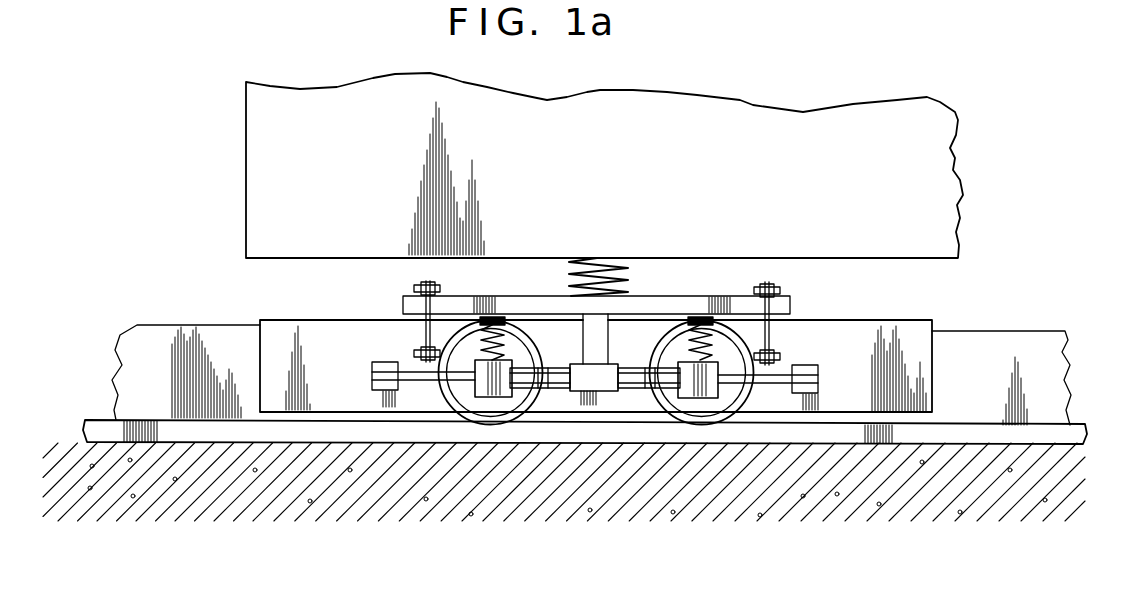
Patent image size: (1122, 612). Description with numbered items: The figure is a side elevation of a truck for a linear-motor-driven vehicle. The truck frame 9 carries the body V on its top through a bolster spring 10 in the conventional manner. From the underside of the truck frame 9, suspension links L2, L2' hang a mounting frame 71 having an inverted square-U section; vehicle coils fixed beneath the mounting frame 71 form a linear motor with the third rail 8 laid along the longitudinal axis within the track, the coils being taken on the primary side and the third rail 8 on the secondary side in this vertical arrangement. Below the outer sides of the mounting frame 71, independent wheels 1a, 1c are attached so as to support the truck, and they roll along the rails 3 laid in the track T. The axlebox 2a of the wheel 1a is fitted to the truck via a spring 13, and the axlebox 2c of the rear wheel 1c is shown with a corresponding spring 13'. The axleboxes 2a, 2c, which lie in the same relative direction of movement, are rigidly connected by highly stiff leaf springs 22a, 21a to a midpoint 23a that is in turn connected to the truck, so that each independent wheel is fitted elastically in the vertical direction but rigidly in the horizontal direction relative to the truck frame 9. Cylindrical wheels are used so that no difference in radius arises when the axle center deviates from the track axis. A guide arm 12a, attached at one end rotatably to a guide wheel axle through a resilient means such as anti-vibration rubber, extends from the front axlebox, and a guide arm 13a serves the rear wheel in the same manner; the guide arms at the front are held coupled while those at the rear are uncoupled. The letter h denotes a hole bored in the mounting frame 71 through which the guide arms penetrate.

The body V is at (935, 186).
The bolster spring 10 is at (566, 258).
The truck frame 9 is at (678, 310).
The mounting frame 71 is at (917, 332).
The third rail 8 is at (1037, 345).
The rails 3 is at (302, 432).
The track T is at (223, 468).
The suspension link L2 is at (398, 321).
The suspension link L2' is at (797, 320).
The spring 13 is at (529, 338).
The primary spring 13' is at (666, 338).
The independent wheel 1a is at (540, 412).
The independent wheel 1c is at (758, 400).
The axlebox 2a is at (497, 398).
The axlebox 2c is at (705, 398).
The hole h is at (372, 380).
The guide arm 12a is at (422, 377).
The guide arm 13a is at (783, 390).
The leaf spring 22a is at (557, 388).
The leaf spring 21a is at (647, 374).
The midpoint 23a is at (603, 392).